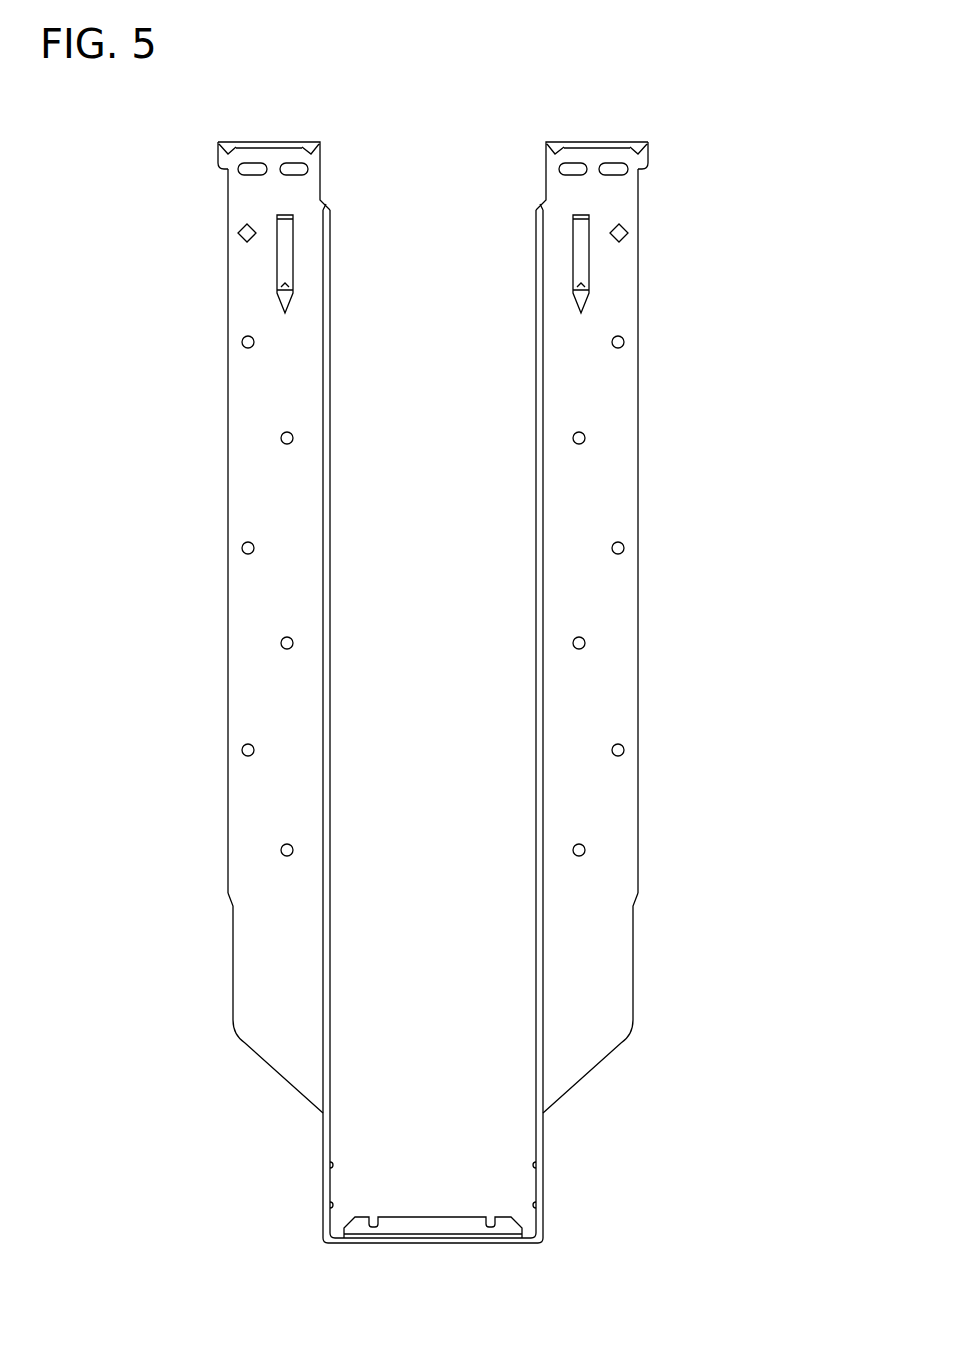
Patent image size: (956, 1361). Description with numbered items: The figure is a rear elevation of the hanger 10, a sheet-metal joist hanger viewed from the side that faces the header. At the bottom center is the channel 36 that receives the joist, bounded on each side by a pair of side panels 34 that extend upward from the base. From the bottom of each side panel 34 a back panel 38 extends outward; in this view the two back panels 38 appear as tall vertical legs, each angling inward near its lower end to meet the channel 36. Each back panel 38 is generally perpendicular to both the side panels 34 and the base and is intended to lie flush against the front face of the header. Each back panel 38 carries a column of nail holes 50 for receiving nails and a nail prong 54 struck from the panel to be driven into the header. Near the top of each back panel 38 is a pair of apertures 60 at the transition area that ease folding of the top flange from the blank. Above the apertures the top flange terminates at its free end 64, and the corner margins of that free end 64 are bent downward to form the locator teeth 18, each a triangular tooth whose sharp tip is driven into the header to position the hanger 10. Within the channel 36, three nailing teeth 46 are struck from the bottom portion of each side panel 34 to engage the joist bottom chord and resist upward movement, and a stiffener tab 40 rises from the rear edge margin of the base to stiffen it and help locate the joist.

The hanger 10 is at (776, 104).
The locator tooth 18 is at (224, 150).
The side panel 34 is at (322, 1142).
The channel 36 is at (416, 986).
The back panel 38 is at (267, 962).
The stiffener tab 40 is at (450, 1222).
The nailing tooth 46 is at (333, 1166).
The nail hole 50 is at (282, 437).
The nail prong 54 is at (280, 285).
The aperture 60 is at (299, 172).
The free end 64 is at (268, 142).